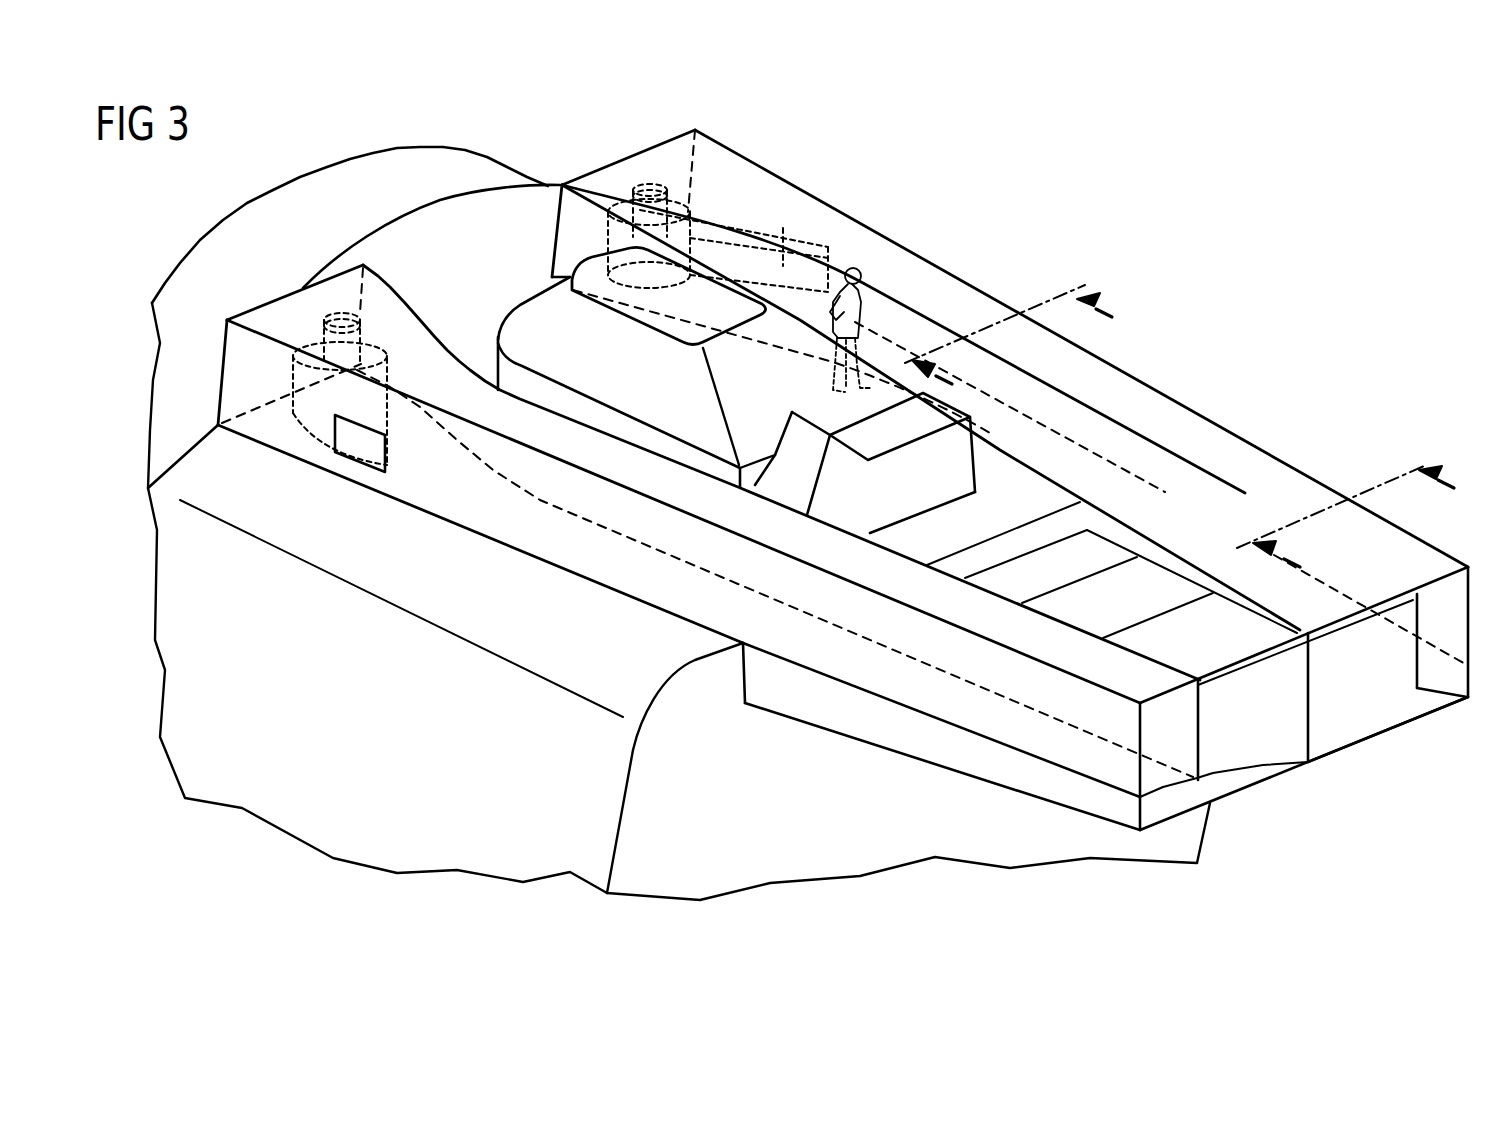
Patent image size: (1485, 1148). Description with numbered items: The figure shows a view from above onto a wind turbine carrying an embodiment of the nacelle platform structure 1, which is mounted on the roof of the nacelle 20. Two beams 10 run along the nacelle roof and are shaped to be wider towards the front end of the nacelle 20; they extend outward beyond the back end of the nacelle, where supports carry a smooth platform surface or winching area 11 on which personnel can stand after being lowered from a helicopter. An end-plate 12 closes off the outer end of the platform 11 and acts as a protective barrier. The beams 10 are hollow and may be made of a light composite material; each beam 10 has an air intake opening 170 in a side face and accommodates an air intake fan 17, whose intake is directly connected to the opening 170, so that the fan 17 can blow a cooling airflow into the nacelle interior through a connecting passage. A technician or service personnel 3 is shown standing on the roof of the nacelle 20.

The nacelle platform structure 1 is at (1226, 321).
The technician or service personnel 3 is at (847, 266).
The beam 10 is at (280, 320).
The platform surface 11 is at (1180, 652).
The end-plate 12 is at (1335, 713).
The air intake fan 17 is at (312, 413).
The air intake opening 170 is at (363, 447).
The nacelle 20 is at (182, 563).